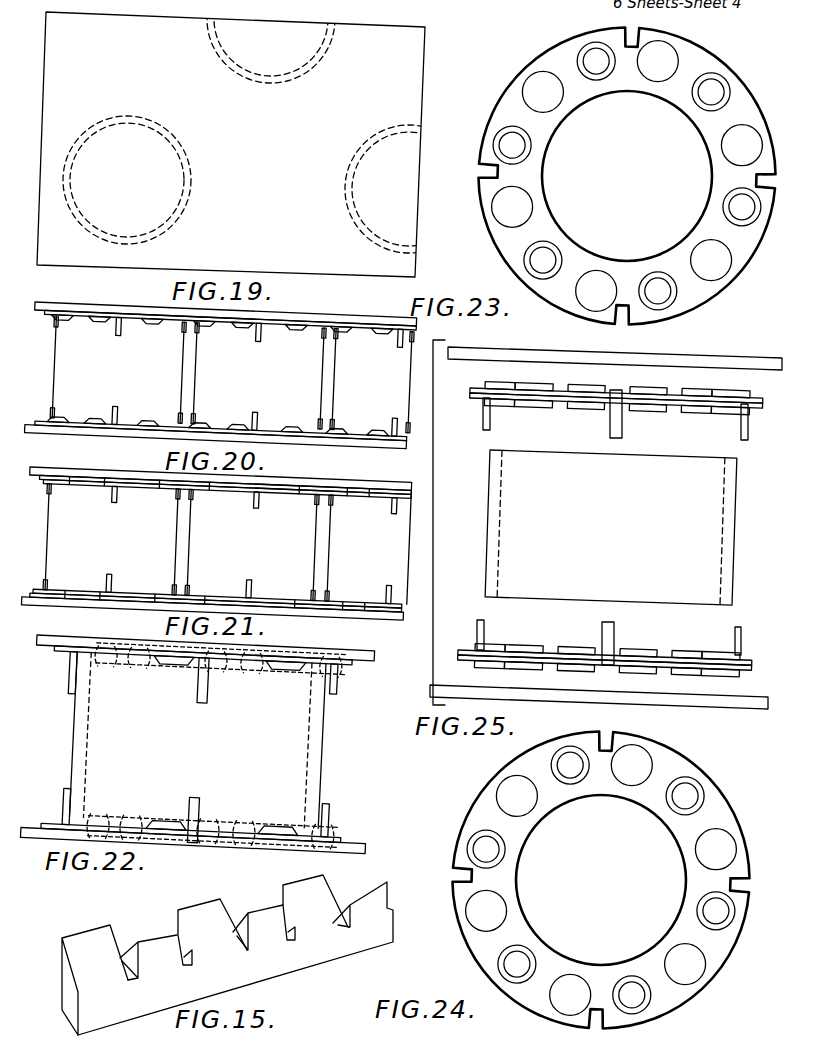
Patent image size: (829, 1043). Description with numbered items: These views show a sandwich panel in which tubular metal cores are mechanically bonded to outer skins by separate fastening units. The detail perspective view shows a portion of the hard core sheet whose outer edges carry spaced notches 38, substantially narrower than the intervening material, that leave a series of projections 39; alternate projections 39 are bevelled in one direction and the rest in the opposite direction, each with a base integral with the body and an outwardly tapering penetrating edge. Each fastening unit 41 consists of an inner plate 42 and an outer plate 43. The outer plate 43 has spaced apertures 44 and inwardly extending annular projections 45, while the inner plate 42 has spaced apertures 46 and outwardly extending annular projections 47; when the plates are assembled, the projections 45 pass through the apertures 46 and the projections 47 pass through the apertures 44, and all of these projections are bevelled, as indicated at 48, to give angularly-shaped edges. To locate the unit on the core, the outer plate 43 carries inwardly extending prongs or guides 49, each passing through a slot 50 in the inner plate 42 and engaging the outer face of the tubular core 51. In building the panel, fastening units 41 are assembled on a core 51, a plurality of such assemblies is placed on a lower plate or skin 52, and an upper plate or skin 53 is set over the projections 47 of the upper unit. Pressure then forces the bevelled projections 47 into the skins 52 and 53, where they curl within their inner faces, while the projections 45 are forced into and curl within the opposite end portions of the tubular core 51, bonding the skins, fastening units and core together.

In FIG. 15, the notches 38 is at (130, 985).
In FIG. 15, the projections 39 is at (82, 935).
In FIG. 25, the fastening unit 41 is at (466, 395).
In FIG. 25, the inner plate 42 is at (760, 404).
In FIG. 24, the inner plate 42 is at (719, 788).
In FIG. 23, the outer plate 43 is at (713, 53).
In FIG. 25, the outer plate 43 is at (757, 392).
In FIG. 23, the apertures 44 is at (530, 78).
In FIG. 23, the annular projections 45 is at (500, 128).
In FIG. 24, the apertures 46 is at (507, 780).
In FIG. 24, the annular projections 47 is at (470, 836).
In FIG. 22, the bevel 48 is at (272, 678).
In FIG. 23, the prongs or guides 49 is at (478, 171).
In FIG. 25, the prongs or guides 49 is at (489, 428).
In FIG. 24, the slot 50 is at (462, 875).
In FIG. 19, the tubular core 51 is at (82, 226).
In FIG. 20, the tubular core 51 is at (58, 372).
In FIG. 21, the tubular core 51 is at (283, 507).
In FIG. 22, the tubular core 51 is at (328, 735).
In FIG. 25, the tubular core 51 is at (738, 520).
In FIG. 20, the lower plate or skin 52 is at (53, 437).
In FIG. 22, the lower plate or skin 52 is at (217, 847).
In FIG. 25, the lower plate or skin 52 is at (668, 700).
In FIG. 19, the upper plate or skin 53 is at (416, 214).
In FIG. 20, the upper plate or skin 53 is at (67, 306).
In FIG. 22, the upper plate or skin 53 is at (110, 636).
In FIG. 25, the upper plate or skin 53 is at (500, 347).